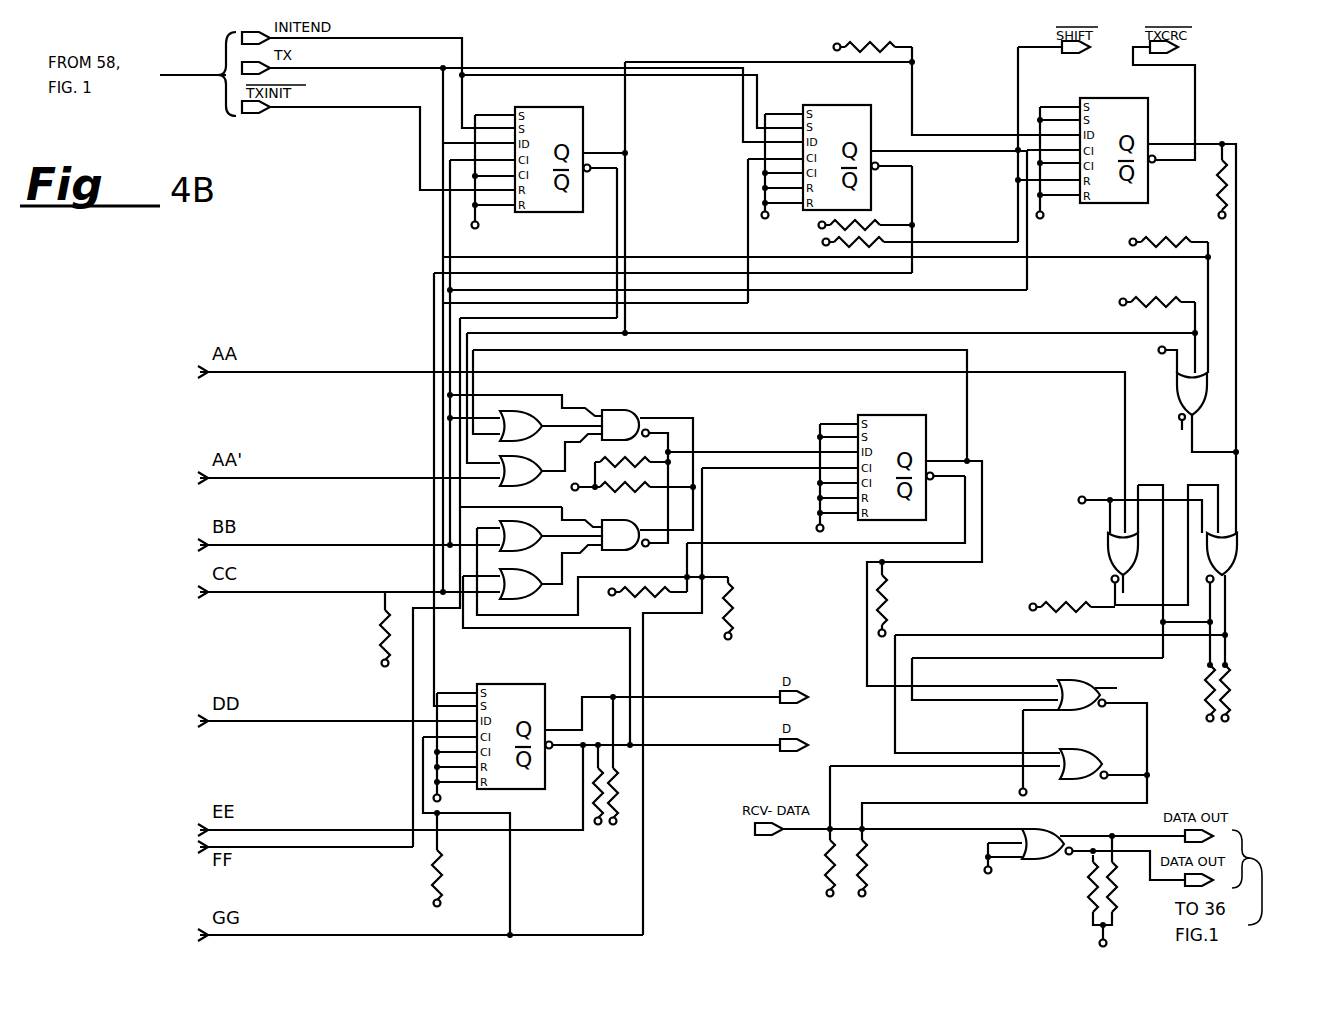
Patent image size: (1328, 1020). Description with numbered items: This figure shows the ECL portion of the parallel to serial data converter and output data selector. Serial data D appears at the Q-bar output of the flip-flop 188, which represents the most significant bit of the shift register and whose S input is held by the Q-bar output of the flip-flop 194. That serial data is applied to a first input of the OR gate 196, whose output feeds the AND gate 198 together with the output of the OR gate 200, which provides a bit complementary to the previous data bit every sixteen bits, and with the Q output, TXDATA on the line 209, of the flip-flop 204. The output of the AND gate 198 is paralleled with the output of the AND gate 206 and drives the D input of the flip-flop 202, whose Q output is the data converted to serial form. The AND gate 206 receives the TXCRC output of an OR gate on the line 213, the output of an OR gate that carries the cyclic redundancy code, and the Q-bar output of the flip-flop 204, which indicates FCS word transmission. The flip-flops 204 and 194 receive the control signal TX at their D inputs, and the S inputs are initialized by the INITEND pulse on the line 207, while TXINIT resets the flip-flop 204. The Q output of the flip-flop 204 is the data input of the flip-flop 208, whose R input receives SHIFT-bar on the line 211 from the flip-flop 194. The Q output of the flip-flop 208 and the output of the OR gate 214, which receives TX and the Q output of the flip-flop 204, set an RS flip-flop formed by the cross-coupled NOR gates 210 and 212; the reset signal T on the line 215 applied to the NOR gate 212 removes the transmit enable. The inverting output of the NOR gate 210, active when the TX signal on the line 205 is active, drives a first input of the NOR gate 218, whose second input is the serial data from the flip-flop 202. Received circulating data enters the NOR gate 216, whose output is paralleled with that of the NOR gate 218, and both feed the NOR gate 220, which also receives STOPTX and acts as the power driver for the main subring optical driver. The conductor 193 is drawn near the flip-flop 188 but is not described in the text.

The flip-flop 188 is at (548, 690).
The line 193 is at (558, 830).
The flip-flop 194 is at (819, 219).
The OR gate 196 is at (517, 520).
The AND gate 198 is at (649, 520).
The OR gate 200 is at (525, 596).
The flip-flop 202 is at (934, 427).
The flip-flop 204 is at (582, 222).
The line 205 is at (528, 70).
The AND gate 206 is at (644, 411).
The line 207 is at (464, 54).
The flip-flop 208 is at (1118, 204).
The line 209 is at (704, 60).
The NOR gate 210 is at (526, 487).
The line 211 is at (1022, 98).
The NOR gate 212 is at (1100, 548).
The line 213 is at (1240, 165).
The OR gate 214 is at (1177, 403).
The line 215 is at (1172, 362).
The NOR gate 216 is at (1090, 754).
The NOR gate 218 is at (1094, 682).
The NOR gate 220 is at (1050, 858).